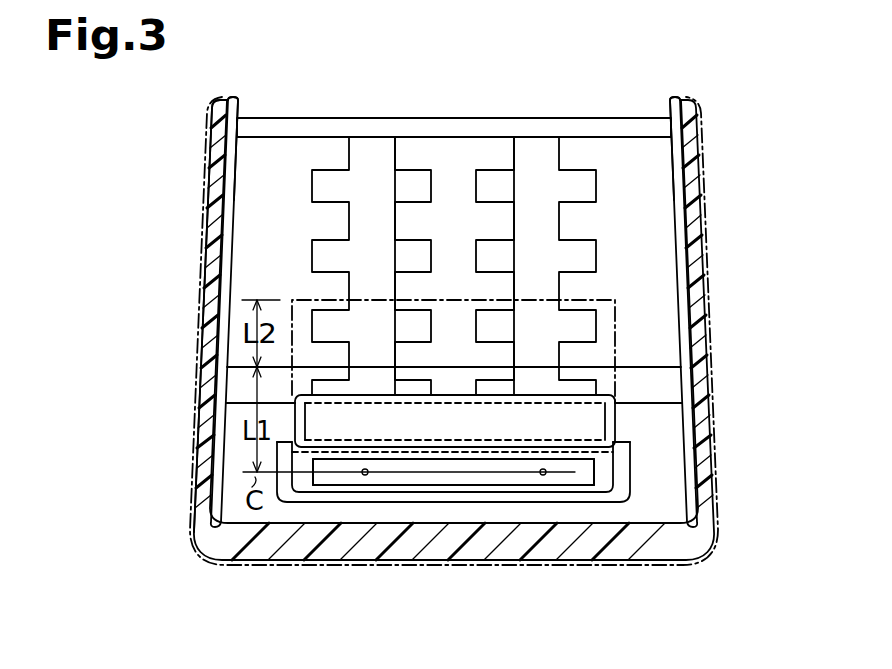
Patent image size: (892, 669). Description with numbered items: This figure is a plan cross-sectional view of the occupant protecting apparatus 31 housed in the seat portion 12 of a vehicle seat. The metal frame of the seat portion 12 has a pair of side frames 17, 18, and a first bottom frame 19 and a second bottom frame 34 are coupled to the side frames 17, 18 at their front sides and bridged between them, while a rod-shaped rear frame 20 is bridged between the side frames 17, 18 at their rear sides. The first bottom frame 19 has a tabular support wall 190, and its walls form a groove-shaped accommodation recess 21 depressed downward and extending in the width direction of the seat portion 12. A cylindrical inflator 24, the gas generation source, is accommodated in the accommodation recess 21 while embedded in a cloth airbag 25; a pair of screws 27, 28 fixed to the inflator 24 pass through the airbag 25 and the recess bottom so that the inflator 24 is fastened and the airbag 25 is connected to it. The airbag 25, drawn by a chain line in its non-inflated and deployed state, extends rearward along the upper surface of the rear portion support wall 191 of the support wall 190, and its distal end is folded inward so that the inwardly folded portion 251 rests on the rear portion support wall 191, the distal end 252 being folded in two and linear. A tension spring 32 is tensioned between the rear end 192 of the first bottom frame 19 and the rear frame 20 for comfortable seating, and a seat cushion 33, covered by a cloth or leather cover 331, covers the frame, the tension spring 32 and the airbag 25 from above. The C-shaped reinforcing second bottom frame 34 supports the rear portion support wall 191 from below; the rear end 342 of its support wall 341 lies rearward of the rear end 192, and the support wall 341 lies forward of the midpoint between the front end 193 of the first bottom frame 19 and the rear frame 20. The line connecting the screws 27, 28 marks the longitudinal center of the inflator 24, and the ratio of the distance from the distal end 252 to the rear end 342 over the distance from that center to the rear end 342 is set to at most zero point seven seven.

The seat portion 12 is at (175, 211).
The side frame 17 is at (237, 100).
The side frame 18 is at (680, 100).
The first bottom frame 19 is at (517, 339).
The rear frame 20 is at (286, 127).
The accommodation recess 21 is at (624, 470).
The inflator 24 is at (457, 478).
The airbag 25 is at (618, 303).
The screw 27 is at (365, 475).
The screw 28 is at (545, 475).
The occupant protecting apparatus 31 is at (453, 539).
The tension spring 32 is at (312, 190).
The seat cushion 33 is at (215, 262).
The second bottom frame 34 is at (372, 366).
The support wall 190 is at (682, 497).
The rear portion support wall 191 is at (640, 415).
The rear end 192 is at (667, 400).
The front end 193 is at (698, 546).
The inwardly folded portion 251 is at (592, 423).
The distal end 252 is at (458, 300).
The cover 331 is at (193, 420).
The support wall 341 is at (227, 385).
The rear end 342 is at (228, 362).